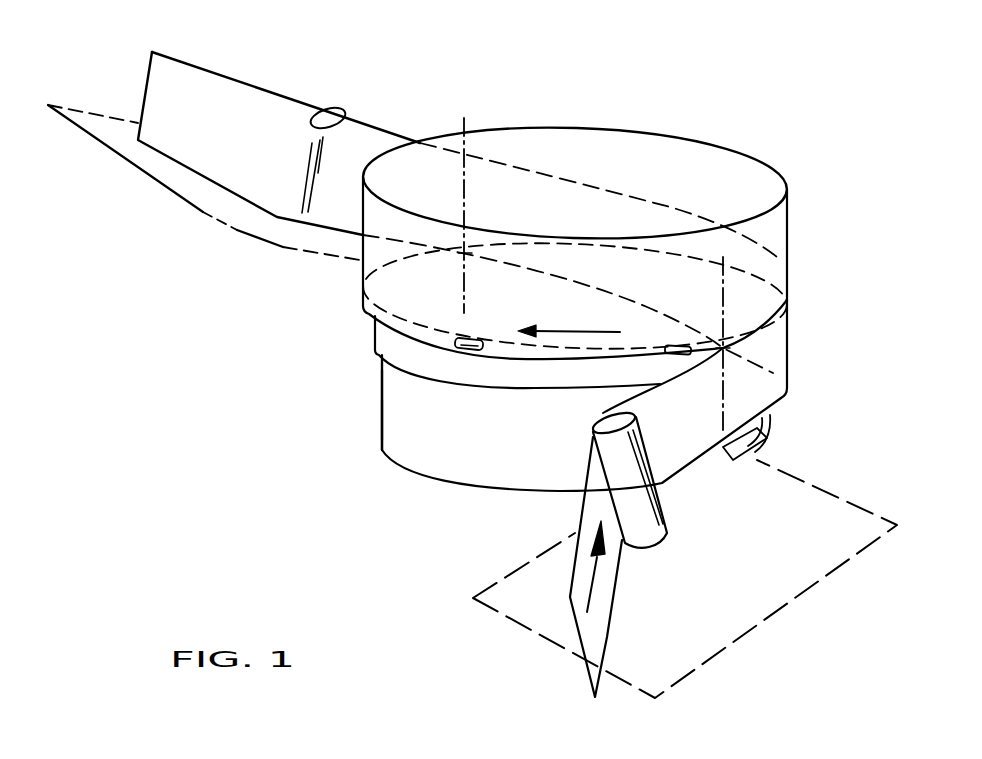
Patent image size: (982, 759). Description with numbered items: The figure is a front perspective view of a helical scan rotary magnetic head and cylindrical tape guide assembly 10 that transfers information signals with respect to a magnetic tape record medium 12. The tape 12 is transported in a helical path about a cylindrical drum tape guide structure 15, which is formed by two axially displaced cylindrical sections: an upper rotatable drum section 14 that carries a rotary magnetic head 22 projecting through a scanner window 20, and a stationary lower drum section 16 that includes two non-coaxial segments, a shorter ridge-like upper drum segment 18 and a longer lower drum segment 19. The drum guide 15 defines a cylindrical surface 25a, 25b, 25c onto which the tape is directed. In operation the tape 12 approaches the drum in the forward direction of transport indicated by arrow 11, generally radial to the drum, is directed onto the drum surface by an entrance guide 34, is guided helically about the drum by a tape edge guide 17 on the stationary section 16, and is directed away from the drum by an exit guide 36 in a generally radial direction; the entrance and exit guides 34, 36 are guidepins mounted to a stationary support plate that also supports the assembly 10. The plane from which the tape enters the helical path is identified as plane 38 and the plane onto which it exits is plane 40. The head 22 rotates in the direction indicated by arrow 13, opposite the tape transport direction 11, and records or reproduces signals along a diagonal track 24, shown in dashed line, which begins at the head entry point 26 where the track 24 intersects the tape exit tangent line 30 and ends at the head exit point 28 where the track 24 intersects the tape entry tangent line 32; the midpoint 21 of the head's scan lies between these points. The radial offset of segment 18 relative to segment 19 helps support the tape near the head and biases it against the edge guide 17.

The rotary magnetic head and cylindrical tape guide assembly 10 is at (320, 296).
The forward direction of tape transport arrow 11 is at (590, 585).
The magnetic tape record medium 12 is at (230, 86).
The direction of head rotation arrow 13 is at (563, 328).
The upper rotatable cylindrical drum tape guide section 14 is at (777, 235).
The cylindrical drum tape guide structure 15 is at (369, 459).
The stationary lower drum section 16 is at (383, 377).
The tape edge guide 17 is at (767, 443).
The upper drum segment 18 is at (372, 332).
The lower drum segment 19 is at (388, 423).
The scanner window 20 is at (467, 340).
The midpoint of head scan 21 is at (712, 212).
The rotary magnetic head 22 is at (463, 350).
The scanned track 24 is at (637, 353).
The cylindrical surface 25a is at (440, 303).
The cylindrical surface 25b is at (580, 384).
The cylindrical surface 25c is at (450, 421).
The head entry point 26 is at (466, 253).
The head exit point 28 is at (722, 349).
The tape exit tangent line 30 is at (470, 141).
The tape entry tangent line 32 is at (723, 412).
The entrance guide 34 is at (667, 504).
The exit guide 36 is at (333, 108).
The tape entry plane 38 is at (683, 581).
The tape exit plane 40 is at (177, 192).